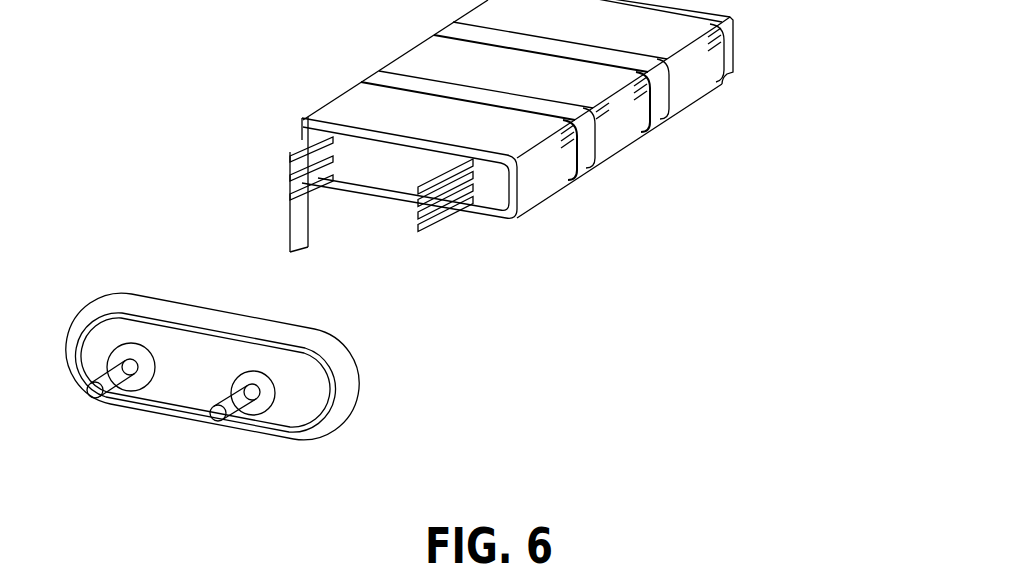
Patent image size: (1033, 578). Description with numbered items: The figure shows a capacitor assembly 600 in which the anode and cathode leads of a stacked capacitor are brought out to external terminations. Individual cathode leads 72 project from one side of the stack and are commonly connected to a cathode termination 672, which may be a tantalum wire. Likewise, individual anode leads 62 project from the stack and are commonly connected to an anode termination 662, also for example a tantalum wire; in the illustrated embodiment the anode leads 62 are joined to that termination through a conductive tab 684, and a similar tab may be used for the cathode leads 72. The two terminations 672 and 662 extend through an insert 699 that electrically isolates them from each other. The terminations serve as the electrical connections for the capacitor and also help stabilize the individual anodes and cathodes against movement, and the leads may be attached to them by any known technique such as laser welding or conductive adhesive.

The battery cell stack 600 is at (748, 84).
The anode leads 62 is at (303, 135).
The conductive tab 684 is at (290, 236).
The cathode leads 72 is at (450, 222).
The insert 699 is at (108, 294).
The anode termination 662 is at (92, 398).
The cathode termination 672 is at (225, 427).